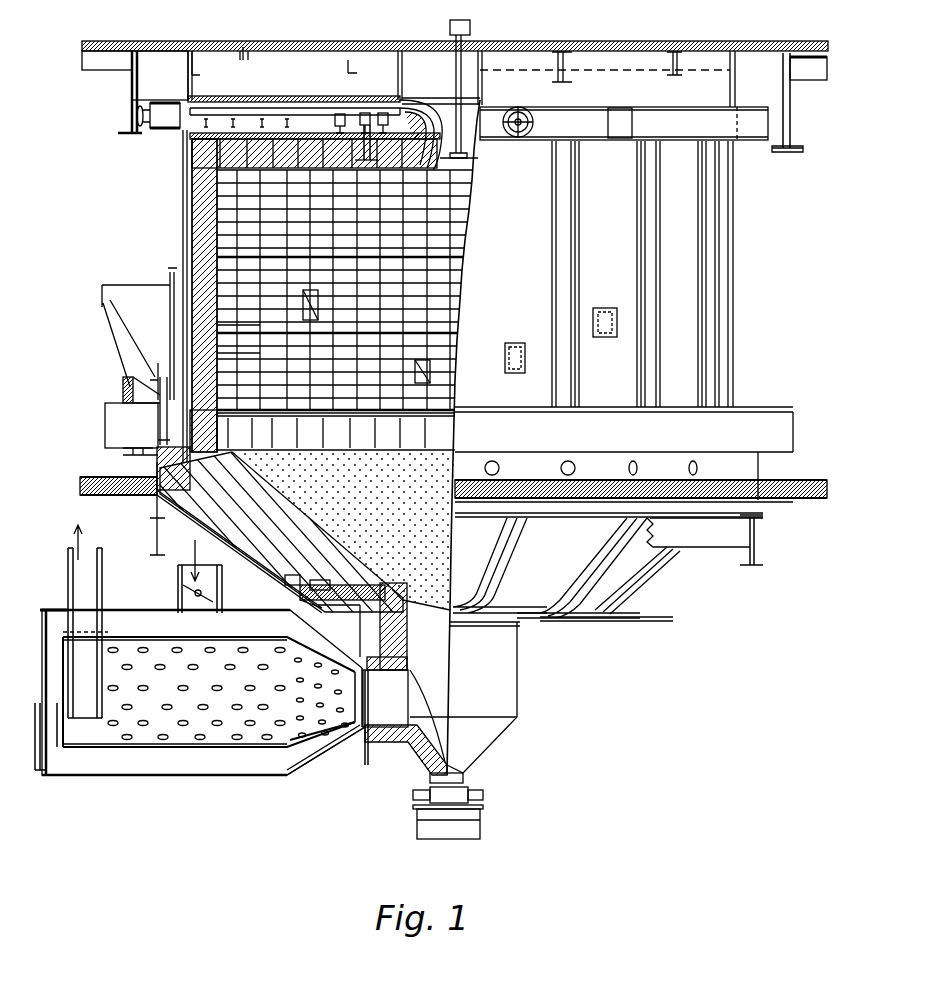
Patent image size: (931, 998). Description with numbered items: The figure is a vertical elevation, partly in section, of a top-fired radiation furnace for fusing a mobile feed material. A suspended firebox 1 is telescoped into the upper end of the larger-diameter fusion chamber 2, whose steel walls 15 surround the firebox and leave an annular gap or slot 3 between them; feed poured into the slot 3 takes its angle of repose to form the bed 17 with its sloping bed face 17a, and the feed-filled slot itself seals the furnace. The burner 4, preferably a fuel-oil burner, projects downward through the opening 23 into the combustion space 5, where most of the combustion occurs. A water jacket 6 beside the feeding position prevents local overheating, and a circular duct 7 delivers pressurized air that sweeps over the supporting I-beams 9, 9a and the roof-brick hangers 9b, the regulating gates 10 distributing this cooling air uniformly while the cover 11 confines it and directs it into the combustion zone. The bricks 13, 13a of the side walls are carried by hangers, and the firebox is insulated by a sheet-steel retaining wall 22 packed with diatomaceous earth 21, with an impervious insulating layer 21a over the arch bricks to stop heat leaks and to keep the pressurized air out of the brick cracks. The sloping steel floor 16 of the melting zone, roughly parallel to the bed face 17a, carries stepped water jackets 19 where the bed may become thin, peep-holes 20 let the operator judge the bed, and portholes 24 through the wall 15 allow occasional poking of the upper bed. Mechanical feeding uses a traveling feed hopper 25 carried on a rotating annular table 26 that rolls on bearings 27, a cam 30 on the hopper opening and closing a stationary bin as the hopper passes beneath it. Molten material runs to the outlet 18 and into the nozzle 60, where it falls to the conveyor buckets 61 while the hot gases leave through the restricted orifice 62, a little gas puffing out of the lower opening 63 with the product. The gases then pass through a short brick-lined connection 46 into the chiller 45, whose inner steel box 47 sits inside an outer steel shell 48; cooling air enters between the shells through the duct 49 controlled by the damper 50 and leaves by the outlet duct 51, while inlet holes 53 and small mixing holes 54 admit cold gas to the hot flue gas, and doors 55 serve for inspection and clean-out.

The firebox 1 is at (178, 217).
The fusion chamber 2 is at (441, 556).
The gap or slot 3 is at (158, 463).
The burner 4 is at (476, 162).
The combustion space 5 is at (464, 217).
The water jacket 6 is at (246, 118).
The circular duct 7 is at (152, 127).
The supporting beams 9 is at (330, 110).
The I-beams 9a is at (285, 120).
The roof-brick hangers 9b is at (370, 145).
The regulating gates 10 is at (170, 130).
The cover 11 is at (262, 112).
The bricks 13 is at (212, 353).
The bottom lining 13a is at (213, 445).
The fusion chamber walls 15 is at (760, 468).
The floor 16 is at (612, 582).
The bed 17 is at (218, 518).
The bed face 17a is at (330, 520).
The furnace outlet 18 is at (440, 612).
The water jackets 19 is at (348, 606).
The peep-holes 20 is at (441, 368).
The insulating material 21 is at (190, 192).
The impervious insulating material 21a is at (291, 140).
The retaining wall 22 is at (190, 242).
The opening 23 is at (486, 146).
The portholes 24 is at (561, 468).
The feed hopper 25 is at (125, 300).
The rotating annular table 26 is at (130, 395).
The bearings 27 is at (135, 455).
The cam 30 is at (172, 272).
The chiller 45 is at (233, 777).
The outlet neck 46 is at (352, 745).
The inner steel box 47 is at (162, 752).
The outer steel shell 48 is at (120, 762).
The duct 49 is at (222, 585).
The damper 50 is at (186, 588).
The outlet duct 51 is at (90, 588).
The inlet holes 53 is at (288, 742).
The small holes 54 is at (320, 745).
The doors 55 is at (42, 752).
The nozzle 60 is at (518, 690).
The conveyor buckets 61 is at (494, 804).
The opening 62 is at (412, 709).
The lower opening 63 is at (455, 775).